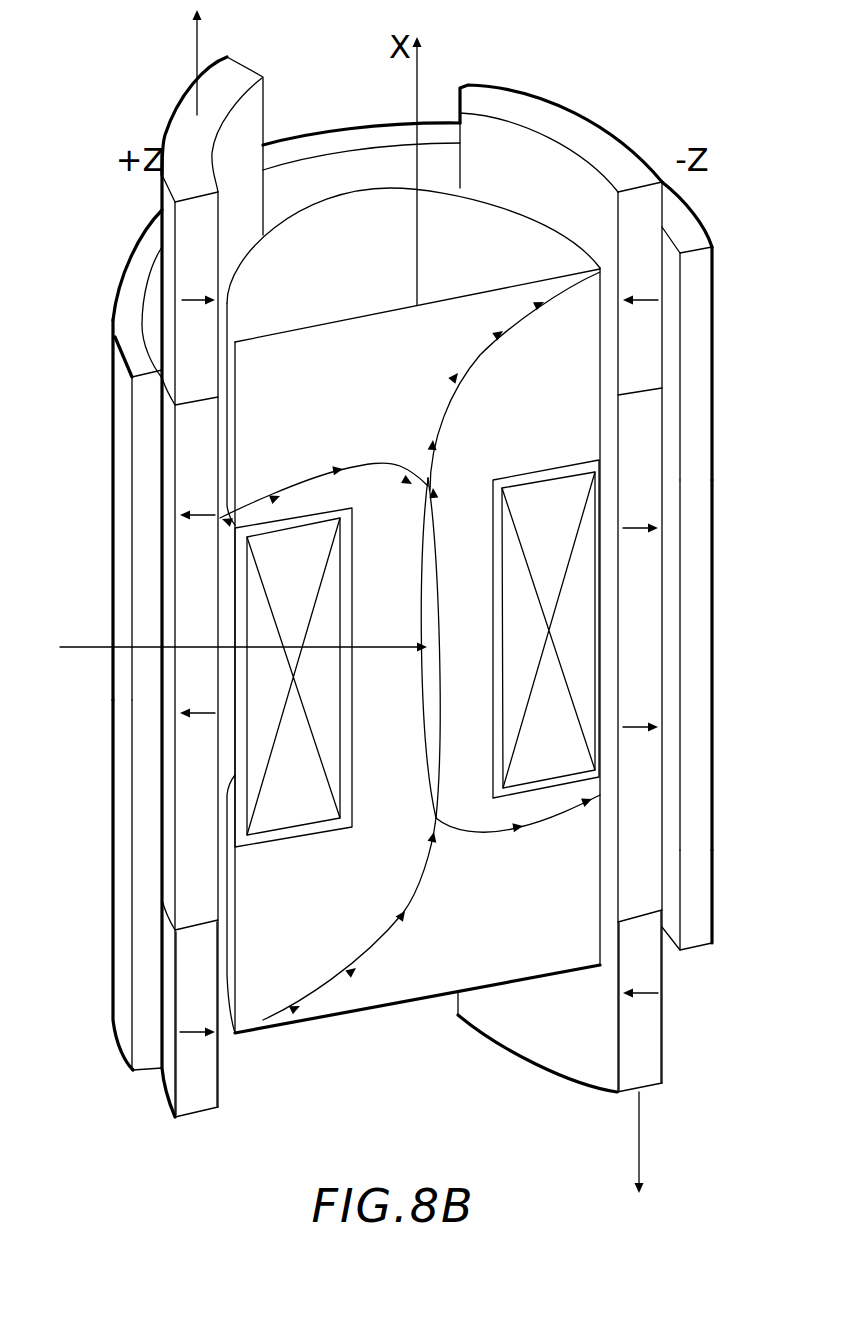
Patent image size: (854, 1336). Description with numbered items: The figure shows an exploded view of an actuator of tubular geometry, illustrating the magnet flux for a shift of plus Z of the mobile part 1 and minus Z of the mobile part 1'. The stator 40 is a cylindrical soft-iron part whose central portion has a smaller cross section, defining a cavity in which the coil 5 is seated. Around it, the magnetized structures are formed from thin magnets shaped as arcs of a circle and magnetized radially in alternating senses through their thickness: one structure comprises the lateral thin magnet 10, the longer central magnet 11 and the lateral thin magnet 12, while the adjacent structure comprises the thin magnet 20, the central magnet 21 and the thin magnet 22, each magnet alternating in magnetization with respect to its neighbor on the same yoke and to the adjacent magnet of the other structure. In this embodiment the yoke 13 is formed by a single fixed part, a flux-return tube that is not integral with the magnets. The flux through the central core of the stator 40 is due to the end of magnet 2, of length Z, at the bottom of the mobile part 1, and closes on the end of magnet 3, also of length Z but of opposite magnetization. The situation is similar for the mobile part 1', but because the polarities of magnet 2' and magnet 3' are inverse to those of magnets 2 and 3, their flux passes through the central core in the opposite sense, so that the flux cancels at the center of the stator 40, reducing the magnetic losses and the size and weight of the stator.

The mobile part 1 is at (190, 653).
The mobile part 1' is at (630, 659).
The magnet 2 is at (115, 885).
The magnet 2' is at (712, 331).
The magnet 3 is at (115, 455).
The magnet 3' is at (715, 665).
The coil 5 is at (513, 647).
The thin magnet 10 is at (565, 120).
The central magnet 11 is at (628, 450).
The thin magnet 12 is at (647, 1057).
The yoke 13 is at (697, 903).
The thin magnet 20 is at (208, 265).
The central magnet 21 is at (208, 673).
The thin magnet 22 is at (207, 1077).
The stator 40 is at (363, 997).